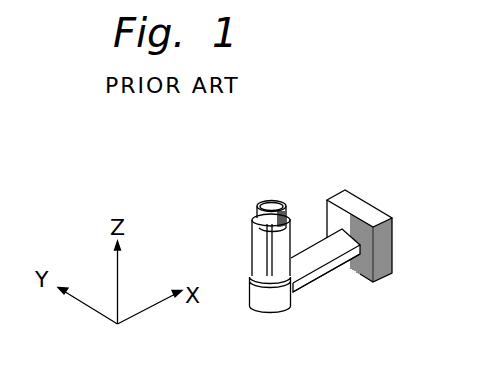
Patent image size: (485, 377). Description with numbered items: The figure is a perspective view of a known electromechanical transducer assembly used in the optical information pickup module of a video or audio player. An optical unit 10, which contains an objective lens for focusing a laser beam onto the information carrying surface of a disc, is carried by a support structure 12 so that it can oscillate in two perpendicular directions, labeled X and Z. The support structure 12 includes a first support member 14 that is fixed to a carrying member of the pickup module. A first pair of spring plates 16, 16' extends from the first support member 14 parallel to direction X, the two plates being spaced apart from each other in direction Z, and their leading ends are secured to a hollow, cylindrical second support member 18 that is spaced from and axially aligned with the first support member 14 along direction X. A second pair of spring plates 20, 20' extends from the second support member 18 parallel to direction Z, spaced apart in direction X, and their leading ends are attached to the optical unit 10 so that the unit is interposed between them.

The optical unit 10 is at (265, 200).
The support structure 12 is at (313, 208).
The first support member 14 is at (380, 204).
The spring plate 16 is at (326, 286).
The spring plate 16' is at (342, 289).
The second support member 18 is at (263, 312).
The spring plate 20 is at (246, 233).
The spring plate 20' is at (242, 247).